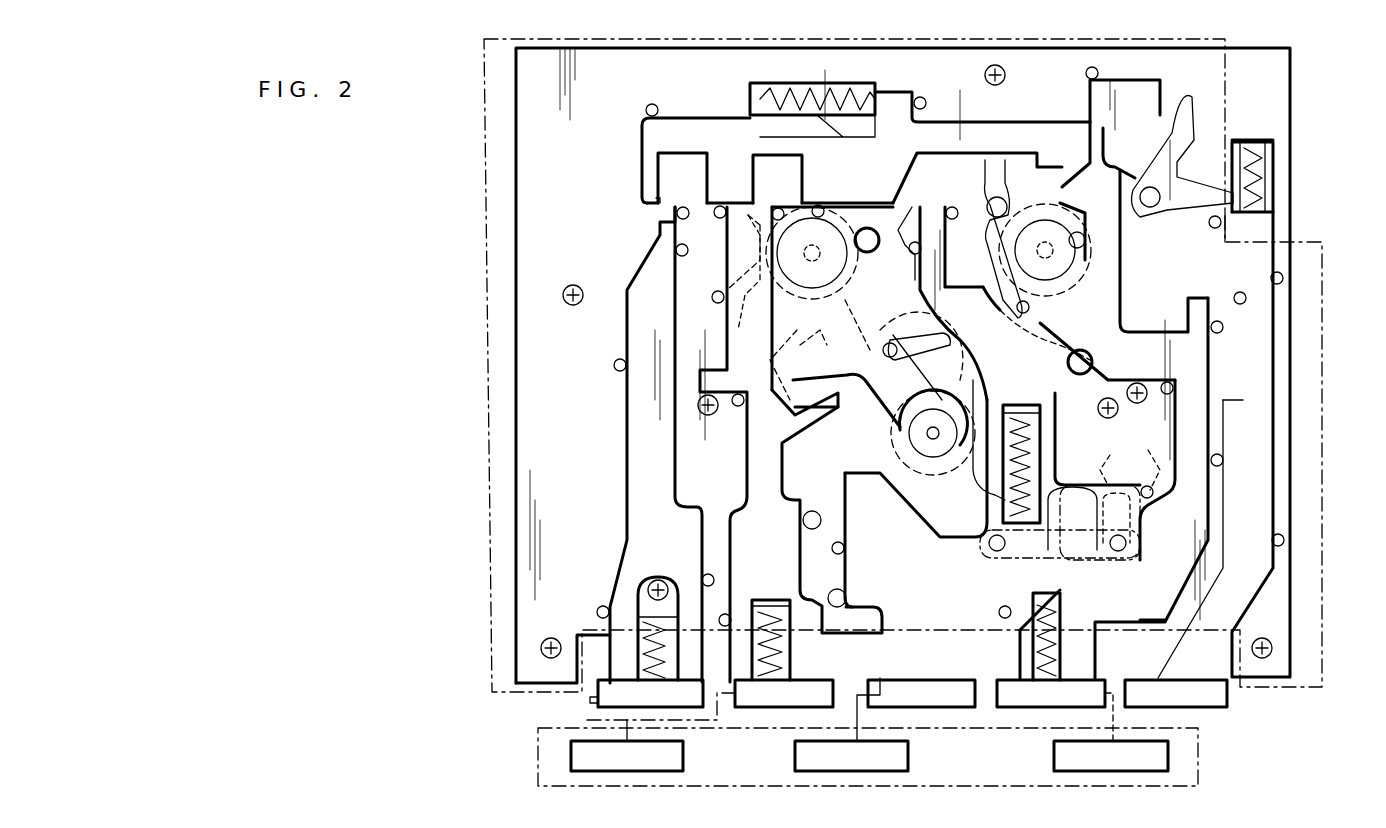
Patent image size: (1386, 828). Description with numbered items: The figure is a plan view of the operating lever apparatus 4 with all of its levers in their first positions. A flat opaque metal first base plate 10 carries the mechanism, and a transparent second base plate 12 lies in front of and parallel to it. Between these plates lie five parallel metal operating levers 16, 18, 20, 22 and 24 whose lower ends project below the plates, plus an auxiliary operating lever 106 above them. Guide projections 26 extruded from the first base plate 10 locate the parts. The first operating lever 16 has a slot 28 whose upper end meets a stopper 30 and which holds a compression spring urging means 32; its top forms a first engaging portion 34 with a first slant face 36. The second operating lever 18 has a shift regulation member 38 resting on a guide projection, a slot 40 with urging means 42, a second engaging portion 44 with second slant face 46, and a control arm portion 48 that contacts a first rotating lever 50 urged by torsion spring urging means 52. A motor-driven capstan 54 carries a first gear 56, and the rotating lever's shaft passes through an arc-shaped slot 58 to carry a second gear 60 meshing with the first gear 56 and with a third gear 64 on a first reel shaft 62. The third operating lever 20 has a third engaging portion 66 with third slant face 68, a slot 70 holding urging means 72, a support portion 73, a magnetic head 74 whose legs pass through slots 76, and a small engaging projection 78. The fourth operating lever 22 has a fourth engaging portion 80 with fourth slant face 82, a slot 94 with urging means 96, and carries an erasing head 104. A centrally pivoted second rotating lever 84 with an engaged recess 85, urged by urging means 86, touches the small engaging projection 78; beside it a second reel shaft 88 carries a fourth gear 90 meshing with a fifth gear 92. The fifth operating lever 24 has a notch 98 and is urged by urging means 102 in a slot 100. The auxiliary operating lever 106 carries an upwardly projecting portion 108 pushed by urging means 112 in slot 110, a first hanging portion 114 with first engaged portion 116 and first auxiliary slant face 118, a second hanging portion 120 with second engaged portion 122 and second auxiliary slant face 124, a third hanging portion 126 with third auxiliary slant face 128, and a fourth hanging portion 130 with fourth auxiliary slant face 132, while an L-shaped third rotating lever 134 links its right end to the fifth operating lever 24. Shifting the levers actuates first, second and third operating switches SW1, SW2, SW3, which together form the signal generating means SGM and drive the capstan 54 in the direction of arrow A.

The operating lever apparatus 4 is at (1310, 76).
The first base plate 10 is at (1285, 112).
The second base plate 12 is at (492, 440).
The first operating lever 16 is at (598, 708).
The second operating lever 18 is at (736, 712).
The third operating lever 20 is at (940, 710).
The fourth operating lever 22 is at (1016, 710).
The fifth operating lever 24 is at (1203, 700).
The guide projections 26 is at (652, 104).
The slot 28 is at (670, 668).
The stopper 30 is at (660, 585).
The urging means 32 is at (655, 665).
The first engaging portion 34 is at (652, 232).
The first slant face 36 is at (650, 208).
The shift regulation member 38 is at (705, 380).
The slot 40 is at (775, 660).
The urging means 42 is at (748, 630).
The second engaging portion 44 is at (742, 240).
The second slant face 46 is at (760, 205).
The control arm portion 48 is at (802, 435).
The first rotating lever 50 is at (878, 398).
The urging means 52 is at (866, 252).
The capstan 54 is at (925, 455).
The first gear 56 is at (890, 447).
The slot 58 is at (940, 345).
The second gear 60 is at (838, 375).
The first reel shaft 62 is at (808, 275).
The third gear 64 is at (745, 295).
The third engaging portion 66 is at (910, 215).
The third slant face 68 is at (895, 205).
The slot 70 is at (1000, 502).
The urging means 72 is at (1035, 435).
The support portion 73 is at (1085, 492).
The magnetic head 74 is at (1072, 562).
The slots 76 is at (1105, 480).
The small engaging projection 78 is at (988, 292).
The fourth engaging portion 80 is at (1143, 185).
The fourth slant face 82 is at (1068, 165).
The second rotating lever 84 is at (1018, 200).
The engaged recess 85 is at (995, 250).
The urging means 86 is at (1075, 378).
The second reel shaft 88 is at (1090, 268).
The fourth gear 90 is at (1100, 250).
The fifth gear 92 is at (1068, 328).
The slot 94 is at (1065, 668).
The urging means 96 is at (1040, 625).
The notch 98 is at (1240, 365).
The slot 100 is at (1270, 190).
The urging means 102 is at (1268, 205).
The erasing head 104 is at (1150, 485).
The auxiliary operating lever 106 is at (700, 118).
The upwardly projecting portion 108 is at (900, 100).
The slot 110 is at (793, 92).
The urging means 112 is at (848, 95).
The first hanging portion 114 is at (642, 150).
The first engaged portion 116 is at (645, 185).
The first auxiliary slant face 118 is at (685, 200).
The second hanging portion 120 is at (712, 175).
The second engaged portion 122 is at (762, 198).
The second auxiliary slant face 124 is at (820, 200).
The third hanging portion 126 is at (788, 118).
The third auxiliary slant face 128 is at (912, 165).
The fourth hanging portion 130 is at (1033, 130).
The fourth auxiliary slant face 132 is at (1107, 160).
The third rotating lever 134 is at (1178, 150).
The arrow A is at (965, 458).
The first operating switch SW1 is at (683, 756).
The second operating switch SW2 is at (908, 756).
The third operating switch SW3 is at (1168, 756).
The signal generating means SGM is at (1198, 757).